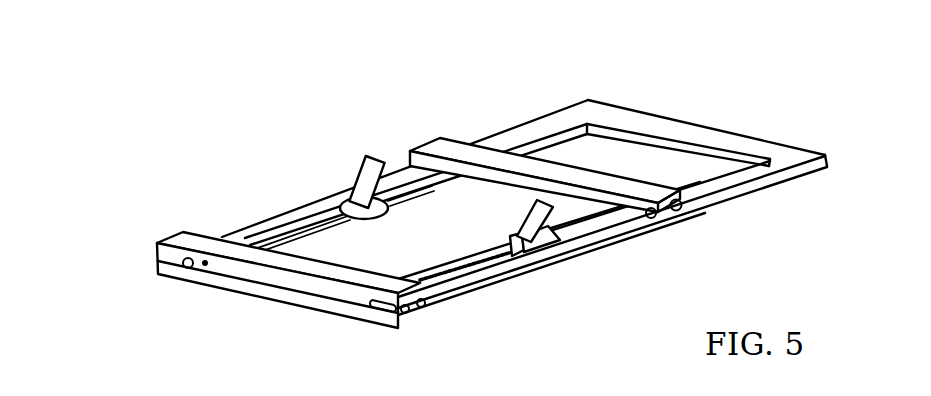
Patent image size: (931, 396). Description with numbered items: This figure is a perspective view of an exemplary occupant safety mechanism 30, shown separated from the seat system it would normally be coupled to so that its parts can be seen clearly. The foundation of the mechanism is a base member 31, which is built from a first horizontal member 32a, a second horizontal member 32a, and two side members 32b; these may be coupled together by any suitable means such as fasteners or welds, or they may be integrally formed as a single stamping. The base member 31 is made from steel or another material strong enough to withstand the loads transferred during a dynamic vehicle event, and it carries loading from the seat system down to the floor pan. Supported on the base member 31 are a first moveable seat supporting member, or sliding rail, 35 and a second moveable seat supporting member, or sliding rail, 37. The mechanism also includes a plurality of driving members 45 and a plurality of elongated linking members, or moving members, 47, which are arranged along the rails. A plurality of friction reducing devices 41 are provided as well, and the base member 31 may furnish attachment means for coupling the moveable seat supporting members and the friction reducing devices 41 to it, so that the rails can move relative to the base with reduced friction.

The occupant safety mechanism 30 is at (442, 216).
The base member 31 is at (634, 122).
The horizontal member 32a is at (735, 145).
The side member 32b is at (500, 140).
The first moveable seat supporting member 35 is at (198, 245).
The second moveable seat supporting member 37 is at (575, 175).
The friction reducing device 41 is at (133, 240).
The driving member 45 is at (407, 187).
The elongated linking member 47 is at (297, 240).